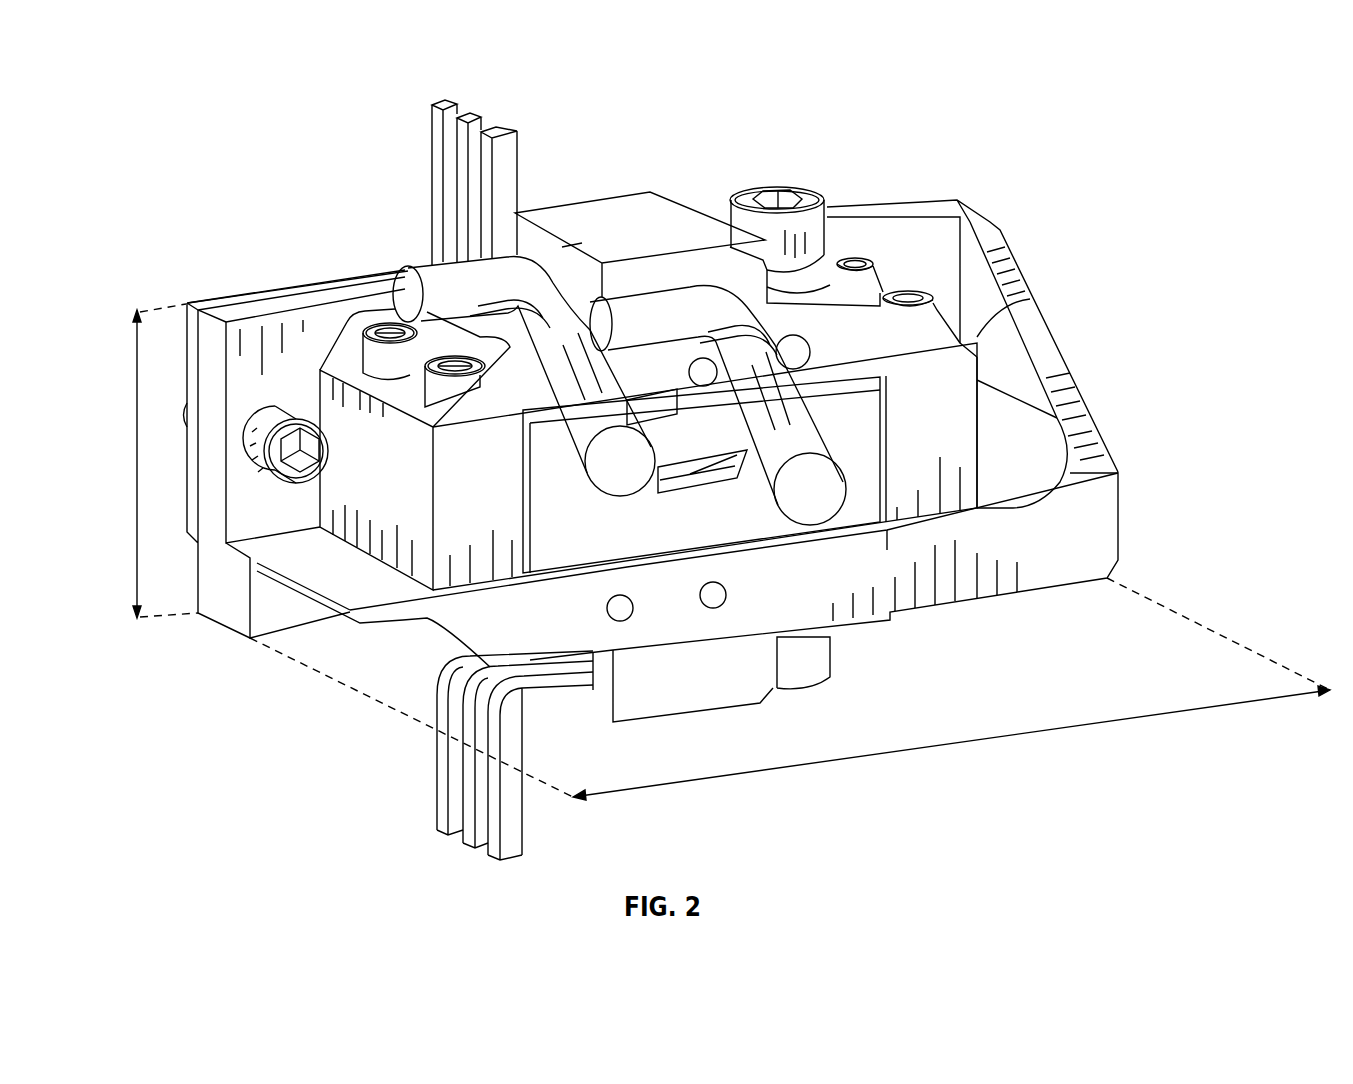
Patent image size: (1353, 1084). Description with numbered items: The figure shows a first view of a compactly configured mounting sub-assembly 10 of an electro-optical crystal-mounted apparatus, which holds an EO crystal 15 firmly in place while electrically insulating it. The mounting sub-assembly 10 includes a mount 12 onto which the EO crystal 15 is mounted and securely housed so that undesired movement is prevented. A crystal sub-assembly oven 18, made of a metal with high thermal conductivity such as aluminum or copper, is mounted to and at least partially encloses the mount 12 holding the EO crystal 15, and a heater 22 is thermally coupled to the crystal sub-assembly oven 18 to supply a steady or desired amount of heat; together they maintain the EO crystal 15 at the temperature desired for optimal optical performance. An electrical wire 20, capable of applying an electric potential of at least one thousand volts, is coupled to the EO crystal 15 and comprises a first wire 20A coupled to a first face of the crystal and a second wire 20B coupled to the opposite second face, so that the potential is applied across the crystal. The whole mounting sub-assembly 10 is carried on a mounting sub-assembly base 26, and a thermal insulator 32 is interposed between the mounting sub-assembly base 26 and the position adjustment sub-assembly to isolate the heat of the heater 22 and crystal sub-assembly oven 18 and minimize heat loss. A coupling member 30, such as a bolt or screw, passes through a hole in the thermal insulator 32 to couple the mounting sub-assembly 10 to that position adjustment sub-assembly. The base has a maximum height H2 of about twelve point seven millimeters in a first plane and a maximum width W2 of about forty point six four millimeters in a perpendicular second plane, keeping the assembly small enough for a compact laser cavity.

The mounting sub-assembly 10 is at (658, 128).
The mount 12 is at (730, 526).
The EO crystal 15 is at (672, 475).
The crystal sub-assembly oven 18 is at (1030, 299).
The electrical wire 20 is at (454, 216).
The first wire 20A is at (413, 270).
The second wire 20B is at (651, 297).
The heater 22 is at (673, 223).
The mounting sub-assembly base 26 is at (1080, 445).
The coupling member 30 is at (324, 455).
The thermal insulator 32 is at (243, 297).
The maximum height H2 is at (132, 461).
The maximum width W2 is at (973, 744).